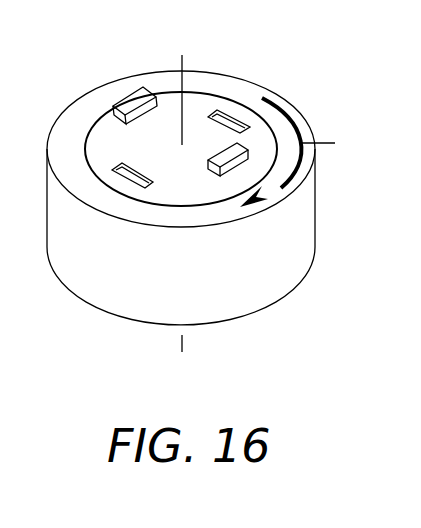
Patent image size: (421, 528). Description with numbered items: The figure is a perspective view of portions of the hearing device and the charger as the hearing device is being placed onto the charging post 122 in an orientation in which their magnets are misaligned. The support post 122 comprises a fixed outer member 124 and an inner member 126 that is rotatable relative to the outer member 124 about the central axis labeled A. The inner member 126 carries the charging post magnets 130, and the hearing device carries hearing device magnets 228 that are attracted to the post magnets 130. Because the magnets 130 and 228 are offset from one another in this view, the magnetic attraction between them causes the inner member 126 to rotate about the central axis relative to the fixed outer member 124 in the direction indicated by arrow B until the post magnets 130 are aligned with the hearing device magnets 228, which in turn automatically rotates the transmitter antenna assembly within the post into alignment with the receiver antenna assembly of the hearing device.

The hearing device support post 122 is at (197, 204).
The fixed outer member 124 is at (115, 315).
The inner member 126 is at (206, 202).
The magnets 130 is at (127, 178).
The hearing device magnets 228 is at (130, 92).